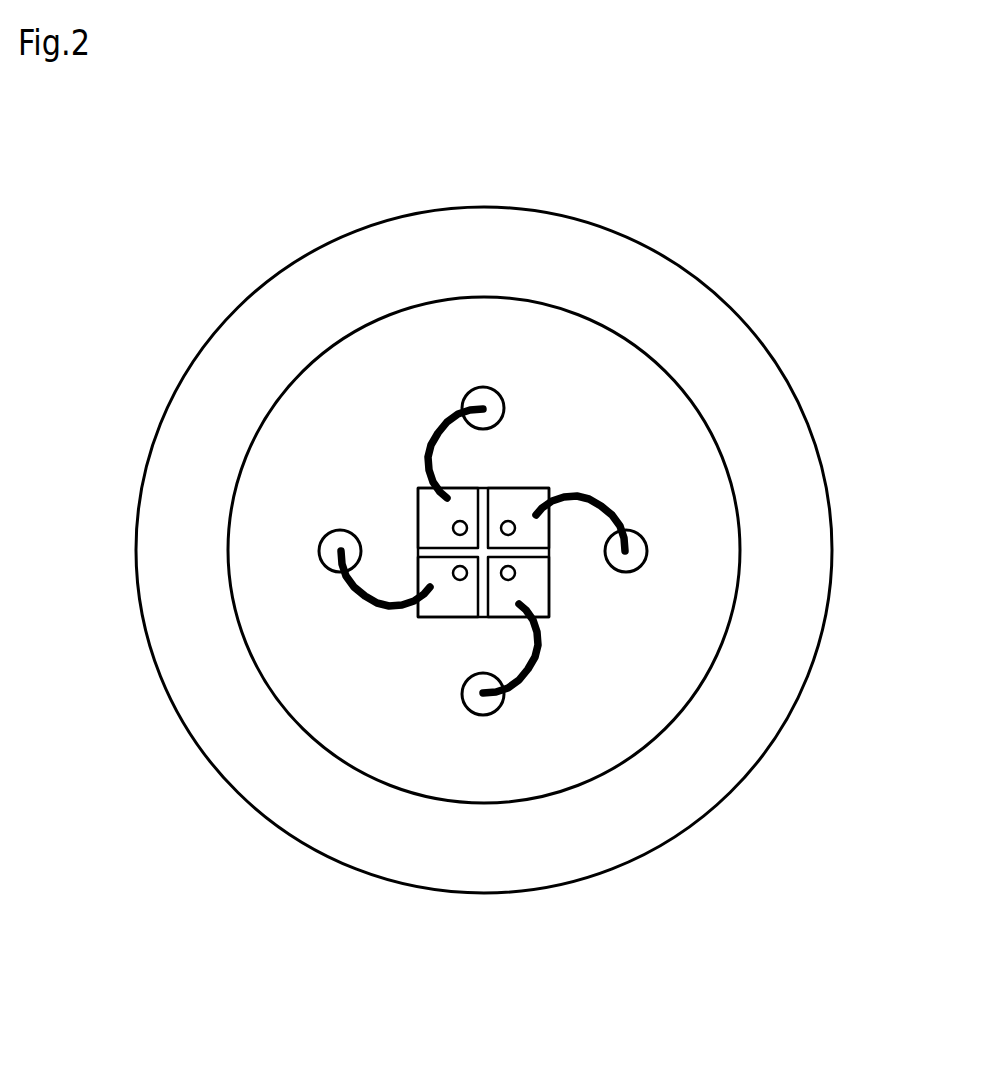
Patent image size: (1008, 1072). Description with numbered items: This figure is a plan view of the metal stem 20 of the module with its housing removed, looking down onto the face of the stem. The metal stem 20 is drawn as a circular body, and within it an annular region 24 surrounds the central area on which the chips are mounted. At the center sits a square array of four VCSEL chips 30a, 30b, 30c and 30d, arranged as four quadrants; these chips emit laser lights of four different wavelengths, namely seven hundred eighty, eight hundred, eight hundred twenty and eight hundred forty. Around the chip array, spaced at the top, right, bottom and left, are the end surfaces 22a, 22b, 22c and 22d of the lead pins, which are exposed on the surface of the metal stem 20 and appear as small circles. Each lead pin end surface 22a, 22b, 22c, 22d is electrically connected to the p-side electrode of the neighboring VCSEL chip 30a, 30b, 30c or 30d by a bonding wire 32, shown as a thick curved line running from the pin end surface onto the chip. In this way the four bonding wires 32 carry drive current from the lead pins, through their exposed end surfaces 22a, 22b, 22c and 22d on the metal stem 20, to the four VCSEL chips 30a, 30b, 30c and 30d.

The metal stem 20 is at (491, 550).
The annular portion 24 is at (546, 550).
The end surface of lead pin 22a is at (761, 549).
The end surface of lead pin 22b is at (589, 795).
The end surface of lead pin 22c is at (193, 549).
The end surface of lead pin 22d is at (424, 290).
The VCSEL chip 30a is at (561, 474).
The VCSEL chip 30b is at (564, 607).
The VCSEL chip 30c is at (410, 622).
The VCSEL chip 30d is at (404, 503).
The bonding wire 32 is at (491, 541).